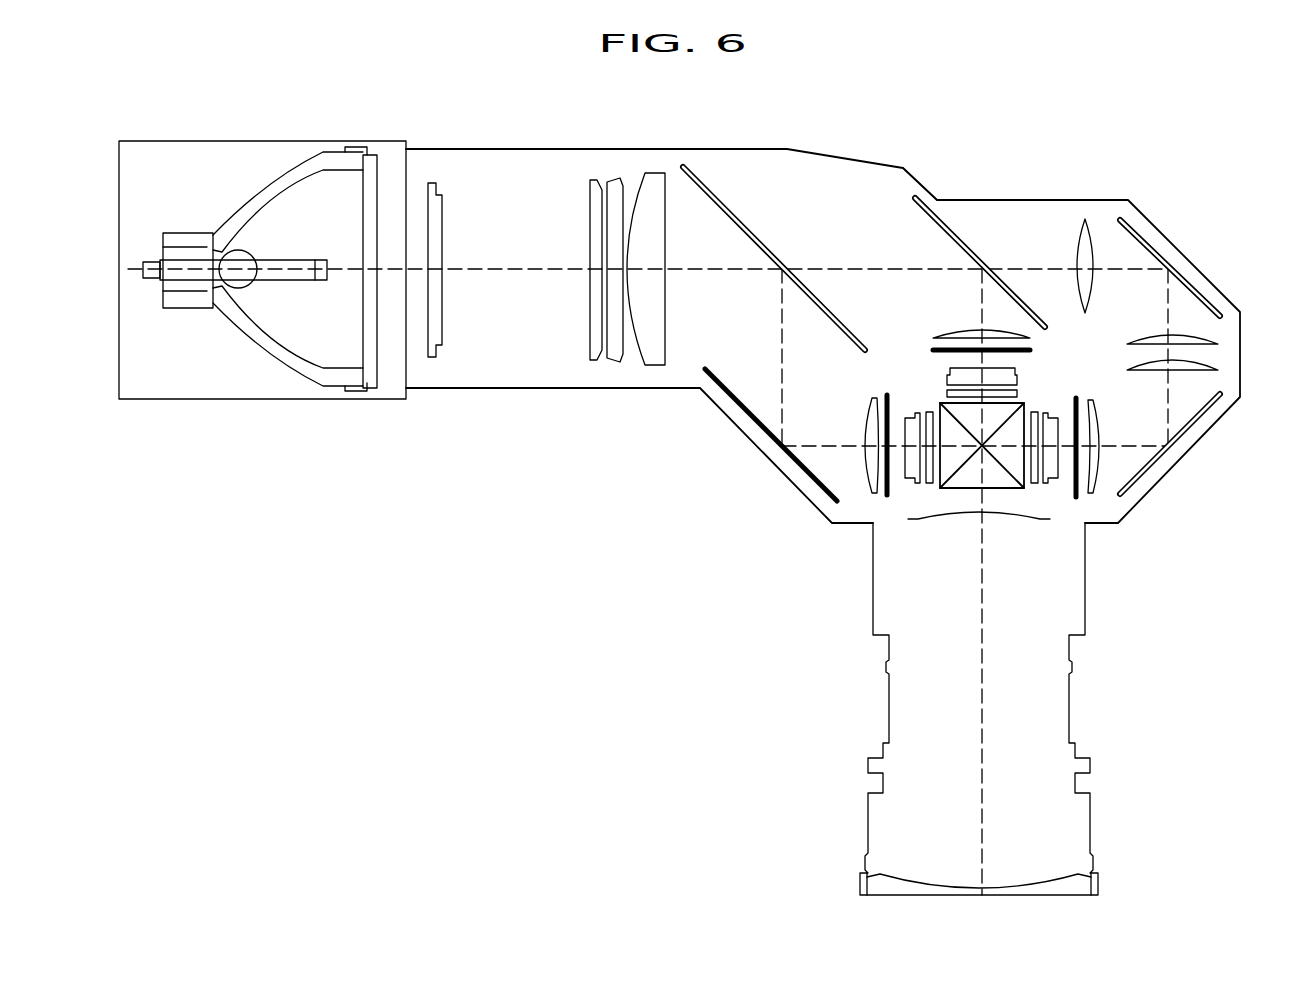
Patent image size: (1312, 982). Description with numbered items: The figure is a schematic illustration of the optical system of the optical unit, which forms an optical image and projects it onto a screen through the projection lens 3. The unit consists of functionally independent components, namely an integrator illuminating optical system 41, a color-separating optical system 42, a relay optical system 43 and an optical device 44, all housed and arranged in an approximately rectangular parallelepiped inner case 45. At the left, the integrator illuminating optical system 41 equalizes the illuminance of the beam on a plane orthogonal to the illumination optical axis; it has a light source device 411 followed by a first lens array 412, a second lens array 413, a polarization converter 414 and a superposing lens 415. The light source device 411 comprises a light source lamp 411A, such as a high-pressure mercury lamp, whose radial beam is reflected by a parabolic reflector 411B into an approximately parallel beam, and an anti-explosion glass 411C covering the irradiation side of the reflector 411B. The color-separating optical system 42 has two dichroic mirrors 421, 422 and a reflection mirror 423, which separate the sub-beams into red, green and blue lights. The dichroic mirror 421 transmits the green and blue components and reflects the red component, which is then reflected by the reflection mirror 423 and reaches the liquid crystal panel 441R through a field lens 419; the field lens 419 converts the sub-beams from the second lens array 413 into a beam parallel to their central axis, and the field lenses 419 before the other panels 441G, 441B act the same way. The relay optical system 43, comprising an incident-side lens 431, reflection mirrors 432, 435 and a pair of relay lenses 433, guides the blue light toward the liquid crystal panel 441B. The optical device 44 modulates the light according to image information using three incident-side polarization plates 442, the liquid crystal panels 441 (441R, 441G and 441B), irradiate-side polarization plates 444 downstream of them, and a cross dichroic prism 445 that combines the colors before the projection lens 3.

The projection lens 3 is at (1070, 705).
The integrator illuminating optical system 41 is at (608, 133).
The light source device 411 is at (405, 110).
The light source lamp 411A is at (240, 250).
The reflector 411B is at (306, 156).
The anti-explosion glass 411C is at (379, 157).
The first lens array 412 is at (442, 230).
The second lens array 413 is at (590, 187).
The polarization converter 414 is at (614, 181).
The superposing lens 415 is at (665, 232).
The color-separating optical system 42 is at (881, 148).
The dichroic mirror 421 is at (737, 213).
The dichroic mirror 422 is at (968, 236).
The reflection mirror 423 is at (718, 376).
The inner case 45 is at (923, 178).
The relay optical system 43 is at (1188, 208).
The incident-side lens 431 is at (1085, 218).
The reflection mirror 432 is at (1197, 283).
The relay lens 433 is at (1222, 338).
The reflection mirror 435 is at (1172, 452).
The optical device 44 is at (1044, 380).
The field lens 419 is at (947, 332).
The liquid crystal panel 441 is at (950, 487).
The liquid crystal panel for green 441G is at (947, 377).
The liquid crystal panel for red 441R is at (913, 484).
The liquid crystal panel for blue 441B is at (1050, 484).
The incident-side polarization plate 442 is at (933, 350).
The irradiate-side polarization plate 444 is at (1033, 411).
The cross dichroic prism 445 is at (987, 486).